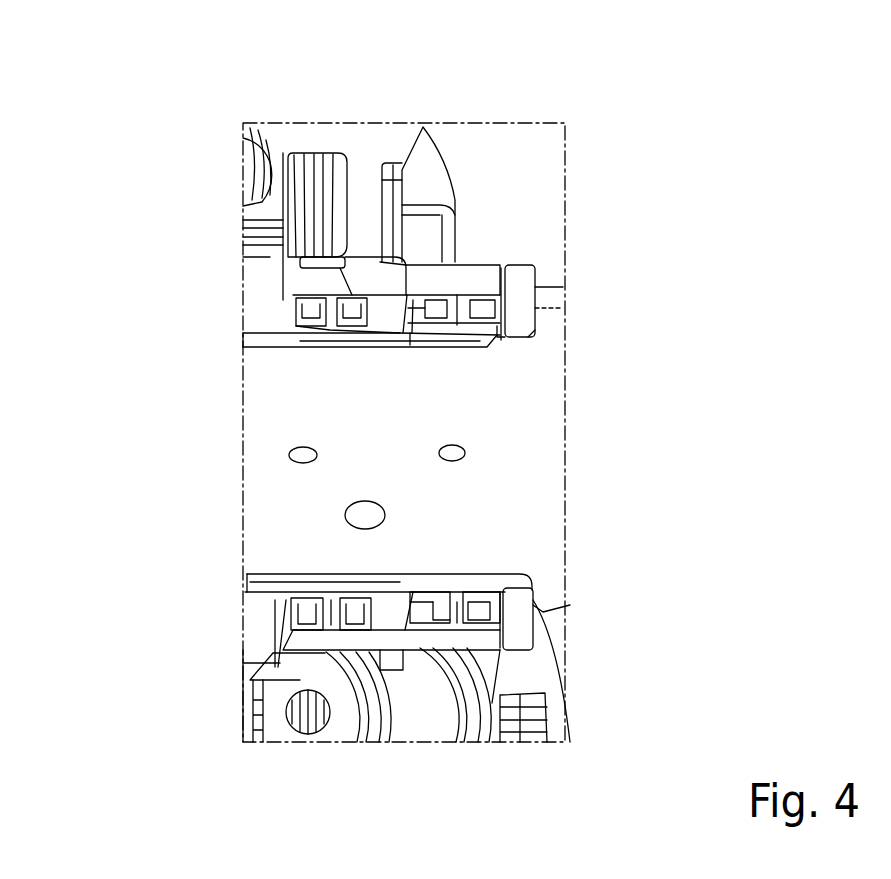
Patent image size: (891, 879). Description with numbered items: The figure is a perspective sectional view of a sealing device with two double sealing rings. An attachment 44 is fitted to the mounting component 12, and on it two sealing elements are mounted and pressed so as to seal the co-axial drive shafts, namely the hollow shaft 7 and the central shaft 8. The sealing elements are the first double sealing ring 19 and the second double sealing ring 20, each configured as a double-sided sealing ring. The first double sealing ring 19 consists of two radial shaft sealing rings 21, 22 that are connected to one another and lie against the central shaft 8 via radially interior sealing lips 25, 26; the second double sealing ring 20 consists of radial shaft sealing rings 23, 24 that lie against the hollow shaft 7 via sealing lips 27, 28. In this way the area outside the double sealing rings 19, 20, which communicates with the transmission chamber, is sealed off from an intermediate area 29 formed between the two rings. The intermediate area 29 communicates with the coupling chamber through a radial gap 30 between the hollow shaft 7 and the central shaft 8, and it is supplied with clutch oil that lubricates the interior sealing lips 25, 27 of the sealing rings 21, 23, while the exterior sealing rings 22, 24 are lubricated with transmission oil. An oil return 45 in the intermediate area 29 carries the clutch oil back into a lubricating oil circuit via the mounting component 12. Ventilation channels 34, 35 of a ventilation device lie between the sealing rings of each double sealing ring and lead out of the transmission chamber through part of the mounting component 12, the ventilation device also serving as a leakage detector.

The hollow shaft 7 is at (288, 332).
The central shaft 8 is at (564, 525).
The mounting component 12 is at (365, 100).
The first double sealing ring 19 is at (352, 261).
The second double sealing ring 20 is at (494, 267).
The radial shaft sealing ring 21 is at (498, 308).
The radial shaft sealing ring 22 is at (497, 285).
The radial shaft sealing ring 23 is at (335, 265).
The radial shaft sealing ring 24 is at (291, 280).
The sealing lip 25 is at (569, 424).
The sealing lip 26 is at (520, 338).
The sealing lip 27 is at (292, 316).
The sealing lip 28 is at (302, 295).
The intermediate area 29 is at (356, 359).
The radial gap 30 is at (567, 464).
The ventilation channel 34 is at (272, 539).
The ventilation channel 35 is at (300, 456).
The attachment 44 is at (423, 127).
The oil return 45 is at (360, 515).